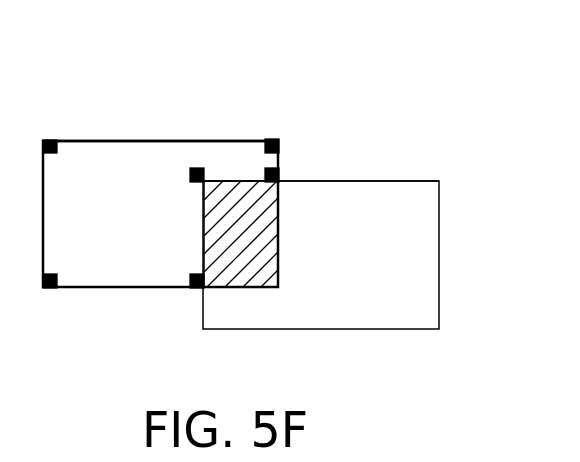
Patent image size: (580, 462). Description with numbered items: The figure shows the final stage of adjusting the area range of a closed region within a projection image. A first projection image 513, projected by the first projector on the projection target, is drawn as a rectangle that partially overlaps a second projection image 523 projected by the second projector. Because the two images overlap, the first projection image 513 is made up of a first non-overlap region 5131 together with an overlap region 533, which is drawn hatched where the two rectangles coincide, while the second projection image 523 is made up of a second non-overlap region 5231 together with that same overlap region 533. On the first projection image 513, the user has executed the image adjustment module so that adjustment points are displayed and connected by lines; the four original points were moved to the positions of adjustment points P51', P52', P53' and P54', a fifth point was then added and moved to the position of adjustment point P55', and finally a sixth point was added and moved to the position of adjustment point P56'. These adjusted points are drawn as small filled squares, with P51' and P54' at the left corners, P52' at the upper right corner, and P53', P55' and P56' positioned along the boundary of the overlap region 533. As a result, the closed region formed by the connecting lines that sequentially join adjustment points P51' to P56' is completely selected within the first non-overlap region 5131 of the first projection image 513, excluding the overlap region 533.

The first projection image 513 is at (153, 141).
The first non-overlap region 5131 is at (197, 145).
The second projection image 523 is at (352, 181).
The second non-overlap region 5231 is at (397, 183).
The overlap region 533 is at (248, 202).
The adjustment point P51' is at (50, 110).
The adjustment point P52' is at (277, 115).
The adjustment point P53' is at (179, 321).
The adjustment point P54' is at (37, 308).
The adjustment point P55' is at (153, 200).
The adjustment point P56' is at (310, 224).